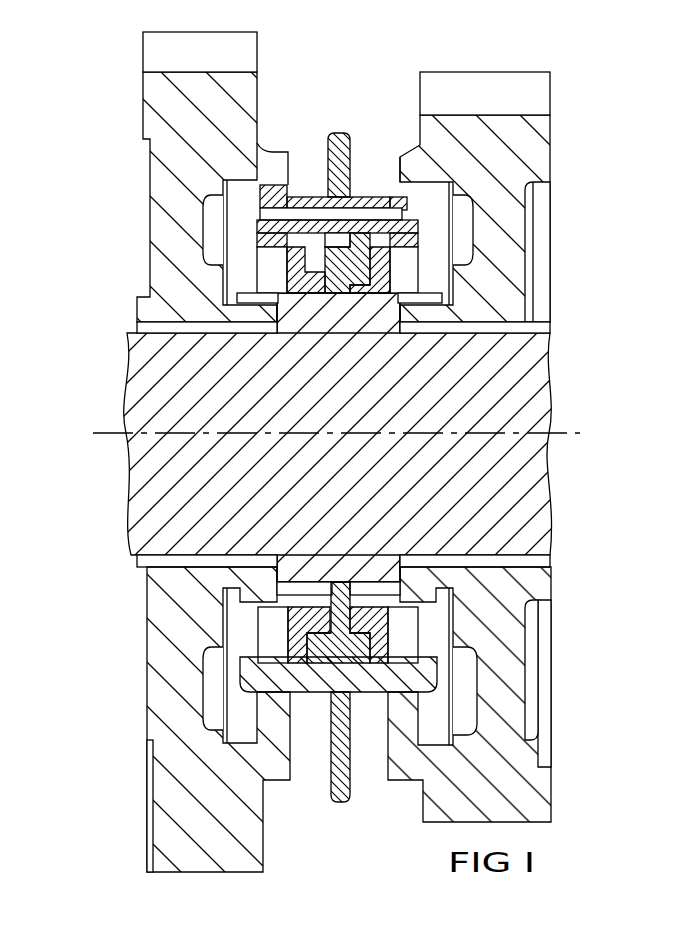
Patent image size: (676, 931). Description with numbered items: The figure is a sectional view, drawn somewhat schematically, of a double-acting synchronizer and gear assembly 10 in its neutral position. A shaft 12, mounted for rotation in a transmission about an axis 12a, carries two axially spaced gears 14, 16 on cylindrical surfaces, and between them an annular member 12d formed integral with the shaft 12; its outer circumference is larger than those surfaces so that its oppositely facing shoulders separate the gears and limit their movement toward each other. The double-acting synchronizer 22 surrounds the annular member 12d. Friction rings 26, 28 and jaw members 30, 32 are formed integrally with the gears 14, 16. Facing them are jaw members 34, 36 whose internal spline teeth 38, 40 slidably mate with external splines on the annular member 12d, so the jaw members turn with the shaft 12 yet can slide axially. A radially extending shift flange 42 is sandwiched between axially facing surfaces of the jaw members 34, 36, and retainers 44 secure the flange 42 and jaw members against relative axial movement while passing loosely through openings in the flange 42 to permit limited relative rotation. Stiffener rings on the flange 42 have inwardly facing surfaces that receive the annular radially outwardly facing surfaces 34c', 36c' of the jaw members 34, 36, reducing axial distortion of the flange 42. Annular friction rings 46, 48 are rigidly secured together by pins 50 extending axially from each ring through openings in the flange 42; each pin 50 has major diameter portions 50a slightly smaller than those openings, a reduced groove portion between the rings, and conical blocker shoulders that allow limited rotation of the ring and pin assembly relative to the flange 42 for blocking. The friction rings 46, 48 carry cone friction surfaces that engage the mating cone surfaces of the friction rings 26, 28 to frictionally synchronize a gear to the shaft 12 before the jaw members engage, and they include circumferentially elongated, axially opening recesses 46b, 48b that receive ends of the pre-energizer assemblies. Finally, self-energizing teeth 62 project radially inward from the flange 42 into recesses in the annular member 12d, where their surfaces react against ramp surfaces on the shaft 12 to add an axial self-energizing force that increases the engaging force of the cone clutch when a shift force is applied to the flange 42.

The synchronizer and gear assembly 10 is at (497, 60).
The shaft 12 is at (361, 480).
The axis 12a is at (550, 434).
The annular member 12d is at (352, 320).
The gear 14 is at (140, 165).
The gear 16 is at (550, 212).
The double-acting synchronizer 22 is at (354, 112).
The friction ring 26 is at (285, 780).
The friction ring 28 is at (400, 776).
The jaw member 30 is at (244, 298).
The jaw member 32 is at (428, 298).
The jaw member 34 is at (282, 633).
The radially outwardly facing surface 34c' is at (204, 659).
The jaw member 36 is at (397, 632).
The radially outwardly facing surface 36c' is at (493, 661).
The internal spline teeth 38 is at (292, 602).
The internal spline teeth 40 is at (400, 602).
The shift flange 42 is at (342, 806).
The retainer 44 is at (440, 678).
The friction ring 46 is at (248, 238).
The axially opening recess 46b is at (274, 200).
The friction ring 48 is at (428, 237).
The axially opening recess 48b is at (455, 182).
The pin 50 is at (305, 194).
The major diameter portion 50a is at (370, 196).
The self-energizing tooth 62 is at (353, 580).